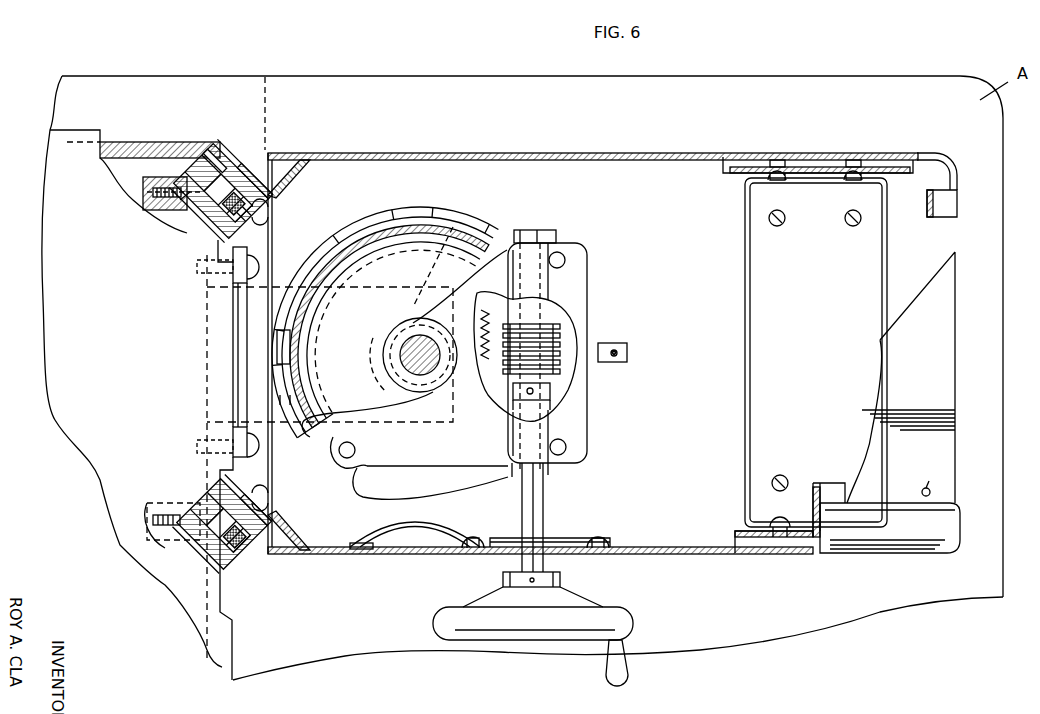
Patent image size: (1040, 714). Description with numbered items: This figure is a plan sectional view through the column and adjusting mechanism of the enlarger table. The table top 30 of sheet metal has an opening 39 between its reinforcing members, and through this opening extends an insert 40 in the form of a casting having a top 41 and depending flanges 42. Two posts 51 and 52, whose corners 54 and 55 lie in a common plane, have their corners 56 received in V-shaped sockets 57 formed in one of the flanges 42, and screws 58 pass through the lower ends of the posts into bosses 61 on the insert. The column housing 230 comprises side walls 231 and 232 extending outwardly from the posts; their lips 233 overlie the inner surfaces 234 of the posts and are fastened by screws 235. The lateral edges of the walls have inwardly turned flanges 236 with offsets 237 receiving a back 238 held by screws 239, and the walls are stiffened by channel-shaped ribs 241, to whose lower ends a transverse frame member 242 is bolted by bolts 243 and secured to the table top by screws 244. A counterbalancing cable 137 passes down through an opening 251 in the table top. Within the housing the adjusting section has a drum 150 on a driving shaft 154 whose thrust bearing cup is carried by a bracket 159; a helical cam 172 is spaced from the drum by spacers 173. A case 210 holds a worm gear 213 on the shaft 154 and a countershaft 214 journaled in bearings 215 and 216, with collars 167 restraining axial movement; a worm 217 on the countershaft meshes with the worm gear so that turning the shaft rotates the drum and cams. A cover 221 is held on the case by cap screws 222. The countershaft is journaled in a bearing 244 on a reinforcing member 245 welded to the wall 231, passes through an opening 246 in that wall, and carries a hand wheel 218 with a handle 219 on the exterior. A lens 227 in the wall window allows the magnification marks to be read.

The table top 30 is at (820, 88).
The opening 39 is at (227, 610).
The insert 40 is at (84, 130).
The top 41 is at (67, 222).
The flanges 42 is at (128, 148).
The post 51 is at (231, 168).
The post 52 is at (204, 548).
The corner 54 is at (213, 230).
The corner 55 is at (221, 143).
The corners 56 is at (188, 193).
The V-shaped sockets 57 is at (197, 162).
The screws 58 is at (268, 156).
The bosses 61 is at (155, 180).
The cable 137 is at (624, 349).
The drum 150 is at (389, 234).
The driving shaft 154 is at (410, 354).
The bracket 159 is at (258, 408).
The collars 167 is at (516, 291).
The helical cam 172 is at (278, 387).
The spacers 173 is at (421, 213).
The case 210 is at (590, 266).
The worm gear 213 is at (490, 362).
The countershaft 214 is at (536, 491).
The bearing 215 is at (552, 286).
The bearing 216 is at (560, 415).
The worm 217 is at (560, 341).
The hand wheel 218 is at (438, 621).
The handle 219 is at (612, 682).
The cover 221 is at (577, 249).
The cap screws 222 is at (561, 254).
The lens 227 is at (360, 462).
The housing 230 is at (923, 152).
The side wall 231 is at (696, 556).
The side wall 232 is at (661, 153).
The lips 233 is at (272, 198).
The inner surfaces 234 is at (258, 228).
The screws 235 is at (264, 213).
The flanges 236 is at (928, 182).
The offsets 237 is at (950, 207).
The back 238 is at (930, 386).
The screws 239 is at (928, 486).
The channel-shaped ribs 241 is at (735, 173).
The transverse frame member 242 is at (749, 356).
The bolts 243 is at (777, 186).
The screws 244 is at (777, 228).
The reinforcing member 245 is at (576, 536).
The opening 246 is at (552, 563).
The opening 251 is at (630, 353).